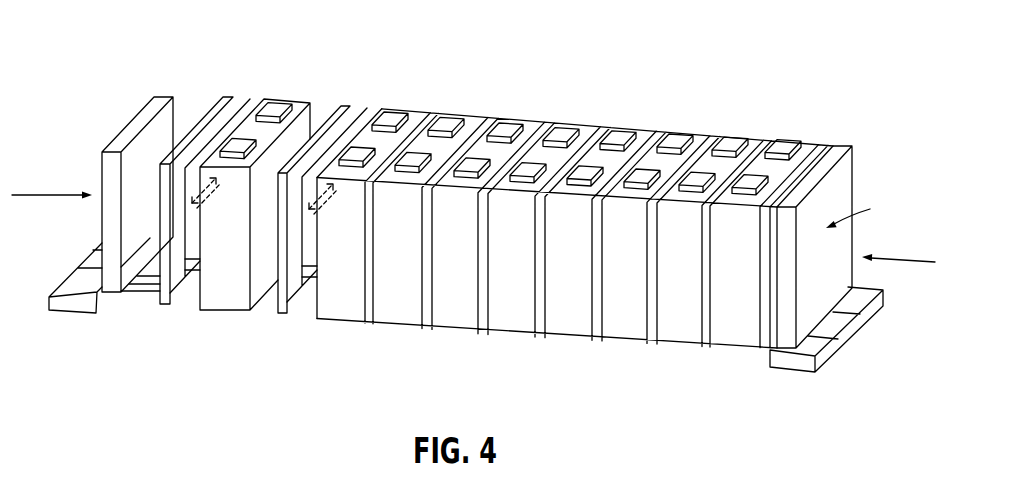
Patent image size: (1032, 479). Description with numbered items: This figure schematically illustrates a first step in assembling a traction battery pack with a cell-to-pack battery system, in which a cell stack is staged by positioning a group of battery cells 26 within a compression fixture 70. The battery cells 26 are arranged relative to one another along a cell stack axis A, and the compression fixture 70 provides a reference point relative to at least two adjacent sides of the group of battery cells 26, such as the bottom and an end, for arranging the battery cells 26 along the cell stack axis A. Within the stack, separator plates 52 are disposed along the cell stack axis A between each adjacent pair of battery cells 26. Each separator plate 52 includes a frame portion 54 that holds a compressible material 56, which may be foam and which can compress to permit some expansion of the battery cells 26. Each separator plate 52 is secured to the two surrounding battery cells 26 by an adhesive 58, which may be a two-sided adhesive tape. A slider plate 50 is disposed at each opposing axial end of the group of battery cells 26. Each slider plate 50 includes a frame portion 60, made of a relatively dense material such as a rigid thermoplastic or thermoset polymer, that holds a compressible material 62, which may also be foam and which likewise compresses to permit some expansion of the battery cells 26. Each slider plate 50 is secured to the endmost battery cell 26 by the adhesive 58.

The battery cells 26 is at (785, 177).
The slider plate 50 is at (213, 110).
The separator plates 52 is at (337, 112).
The frame portion 54 is at (342, 123).
The compressible material 56 is at (308, 260).
The adhesive 58 is at (205, 205).
The frame portion 60 is at (243, 104).
The compressible material 62 is at (192, 250).
The compression fixture 70 is at (862, 211).
The cell stack axis A is at (897, 262).